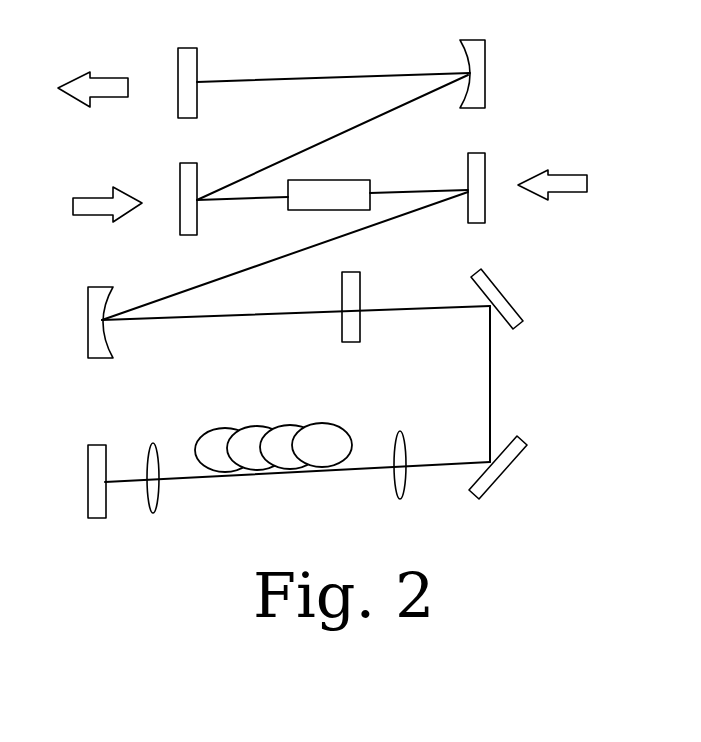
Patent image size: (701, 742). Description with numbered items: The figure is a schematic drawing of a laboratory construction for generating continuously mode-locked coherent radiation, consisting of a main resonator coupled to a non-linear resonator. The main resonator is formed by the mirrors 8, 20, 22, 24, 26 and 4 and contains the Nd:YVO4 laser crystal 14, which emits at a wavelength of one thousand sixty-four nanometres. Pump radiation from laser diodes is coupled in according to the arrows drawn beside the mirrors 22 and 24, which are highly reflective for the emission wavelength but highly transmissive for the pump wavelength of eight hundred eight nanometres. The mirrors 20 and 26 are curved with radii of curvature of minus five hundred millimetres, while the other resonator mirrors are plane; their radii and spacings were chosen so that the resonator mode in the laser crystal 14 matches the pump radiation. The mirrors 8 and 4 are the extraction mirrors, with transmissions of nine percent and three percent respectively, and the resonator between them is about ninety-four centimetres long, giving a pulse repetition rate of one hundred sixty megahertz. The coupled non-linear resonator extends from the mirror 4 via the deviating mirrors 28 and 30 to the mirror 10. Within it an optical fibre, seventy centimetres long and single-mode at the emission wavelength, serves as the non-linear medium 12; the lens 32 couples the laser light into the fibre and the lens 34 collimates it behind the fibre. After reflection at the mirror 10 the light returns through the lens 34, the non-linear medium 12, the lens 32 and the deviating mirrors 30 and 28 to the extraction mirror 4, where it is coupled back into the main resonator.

The mirror 4 is at (350, 327).
The mirror 8 is at (183, 58).
The mirror 10 is at (93, 508).
The non-linear medium 12 is at (218, 438).
The laser crystal 14 is at (330, 188).
The mirror 20 is at (477, 40).
The mirror 22 is at (187, 175).
The mirror 24 is at (477, 158).
The mirror 26 is at (93, 298).
The deviating mirror 28 is at (497, 293).
The deviating mirror 30 is at (505, 458).
The lens 32 is at (398, 483).
The lens 34 is at (153, 508).